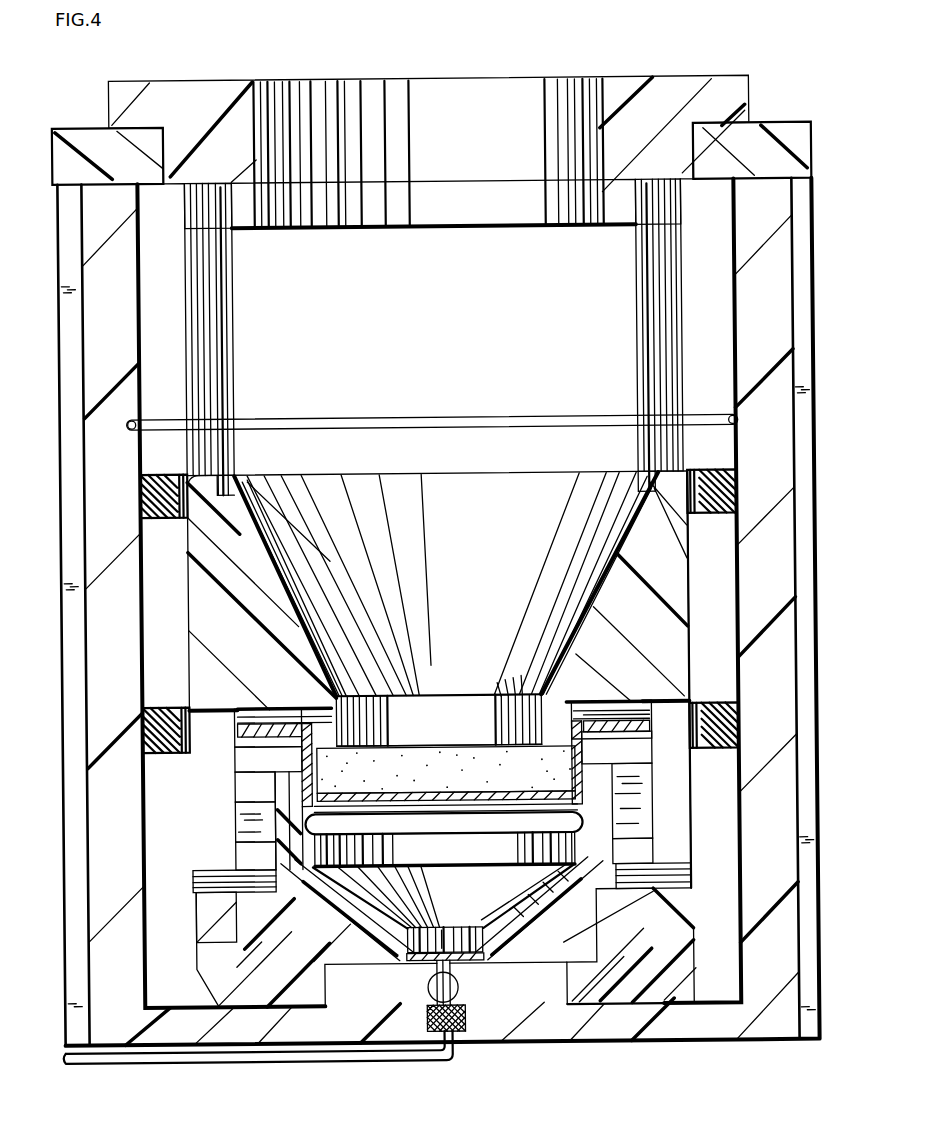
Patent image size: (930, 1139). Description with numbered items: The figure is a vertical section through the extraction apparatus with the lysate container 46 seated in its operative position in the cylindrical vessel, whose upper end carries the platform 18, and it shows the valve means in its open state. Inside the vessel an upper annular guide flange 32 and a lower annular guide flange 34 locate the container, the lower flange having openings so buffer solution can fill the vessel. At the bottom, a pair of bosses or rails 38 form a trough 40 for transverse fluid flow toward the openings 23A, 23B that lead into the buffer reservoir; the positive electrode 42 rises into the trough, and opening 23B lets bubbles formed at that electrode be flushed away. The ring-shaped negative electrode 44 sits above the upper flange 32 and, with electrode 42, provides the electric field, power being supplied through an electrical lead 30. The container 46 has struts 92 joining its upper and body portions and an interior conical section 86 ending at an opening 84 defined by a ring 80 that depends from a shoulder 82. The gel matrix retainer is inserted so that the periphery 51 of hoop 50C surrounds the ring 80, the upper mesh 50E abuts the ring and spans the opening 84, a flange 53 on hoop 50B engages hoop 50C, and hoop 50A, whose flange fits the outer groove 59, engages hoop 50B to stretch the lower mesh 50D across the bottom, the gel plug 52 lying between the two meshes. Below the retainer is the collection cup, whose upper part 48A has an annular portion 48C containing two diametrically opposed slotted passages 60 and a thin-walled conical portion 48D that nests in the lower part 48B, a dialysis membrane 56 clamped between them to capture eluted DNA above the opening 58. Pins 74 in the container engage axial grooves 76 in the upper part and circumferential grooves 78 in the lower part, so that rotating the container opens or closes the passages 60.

The platform 18 is at (95, 124).
The opening 23A is at (492, 835).
The opening 23B is at (450, 982).
The electrical lead 30 is at (380, 1062).
The annular guide flange 32 is at (730, 492).
The annular guide flange 34 is at (738, 730).
The bosses or rails 38 is at (341, 988).
The trough or passageway 40 is at (462, 1000).
The positive electrode 42 is at (424, 990).
The negative electrode 44 is at (548, 414).
The lysate container 46 is at (652, 68).
The upper part of collection cup 48A is at (268, 792).
The lower part of collection cup 48B is at (672, 990).
The annular upper portion 48C is at (274, 805).
The conical lower portion 48D is at (335, 915).
The hoop 50A is at (642, 765).
The hoop 50B is at (560, 768).
The hoop 50C is at (580, 708).
The mesh element 50D is at (415, 790).
The mesh element 50E is at (583, 716).
The periphery 51 is at (545, 712).
The gel plug or matrix 52 is at (466, 745).
The flange 53 is at (296, 708).
The dialysis membrane 56 is at (480, 928).
The opening 58 is at (425, 924).
The outer groove 59 is at (228, 712).
The slotted passages 60 is at (320, 831).
The pins 74 is at (190, 880).
The axially extending grooves 76 is at (233, 830).
The circumferentially extending grooves 78 is at (266, 862).
The ring 80 is at (531, 727).
The shoulder 82 is at (628, 708).
The opening 84 is at (533, 688).
The conical section 86 is at (600, 551).
The struts 92 is at (232, 345).